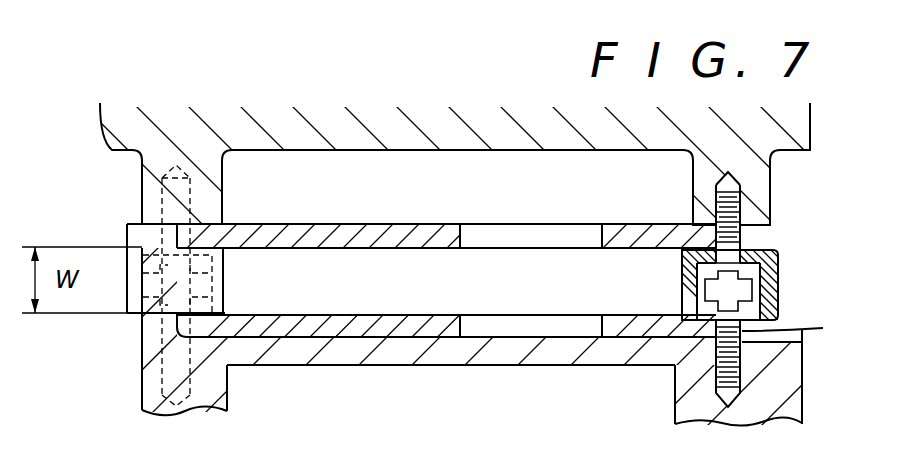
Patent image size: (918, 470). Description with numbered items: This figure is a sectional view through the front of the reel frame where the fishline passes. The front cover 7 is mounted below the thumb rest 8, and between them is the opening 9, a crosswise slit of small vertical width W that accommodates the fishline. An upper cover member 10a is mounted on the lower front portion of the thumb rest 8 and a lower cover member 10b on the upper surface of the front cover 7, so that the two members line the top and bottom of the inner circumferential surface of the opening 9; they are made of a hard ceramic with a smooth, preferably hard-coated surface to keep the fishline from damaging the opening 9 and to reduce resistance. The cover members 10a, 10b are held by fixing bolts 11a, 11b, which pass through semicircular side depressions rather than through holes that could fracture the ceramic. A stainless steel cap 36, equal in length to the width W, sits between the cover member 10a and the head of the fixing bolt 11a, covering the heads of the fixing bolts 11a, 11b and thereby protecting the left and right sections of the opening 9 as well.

The front cover 7 is at (777, 383).
The thumb rest 8 is at (795, 130).
The opening 9 is at (360, 300).
The upper cover member 10a is at (438, 238).
The lower cover member 10b is at (440, 330).
The fixing bolt 11a is at (753, 272).
The fixing bolt 11b is at (753, 310).
The cap 36 is at (768, 248).